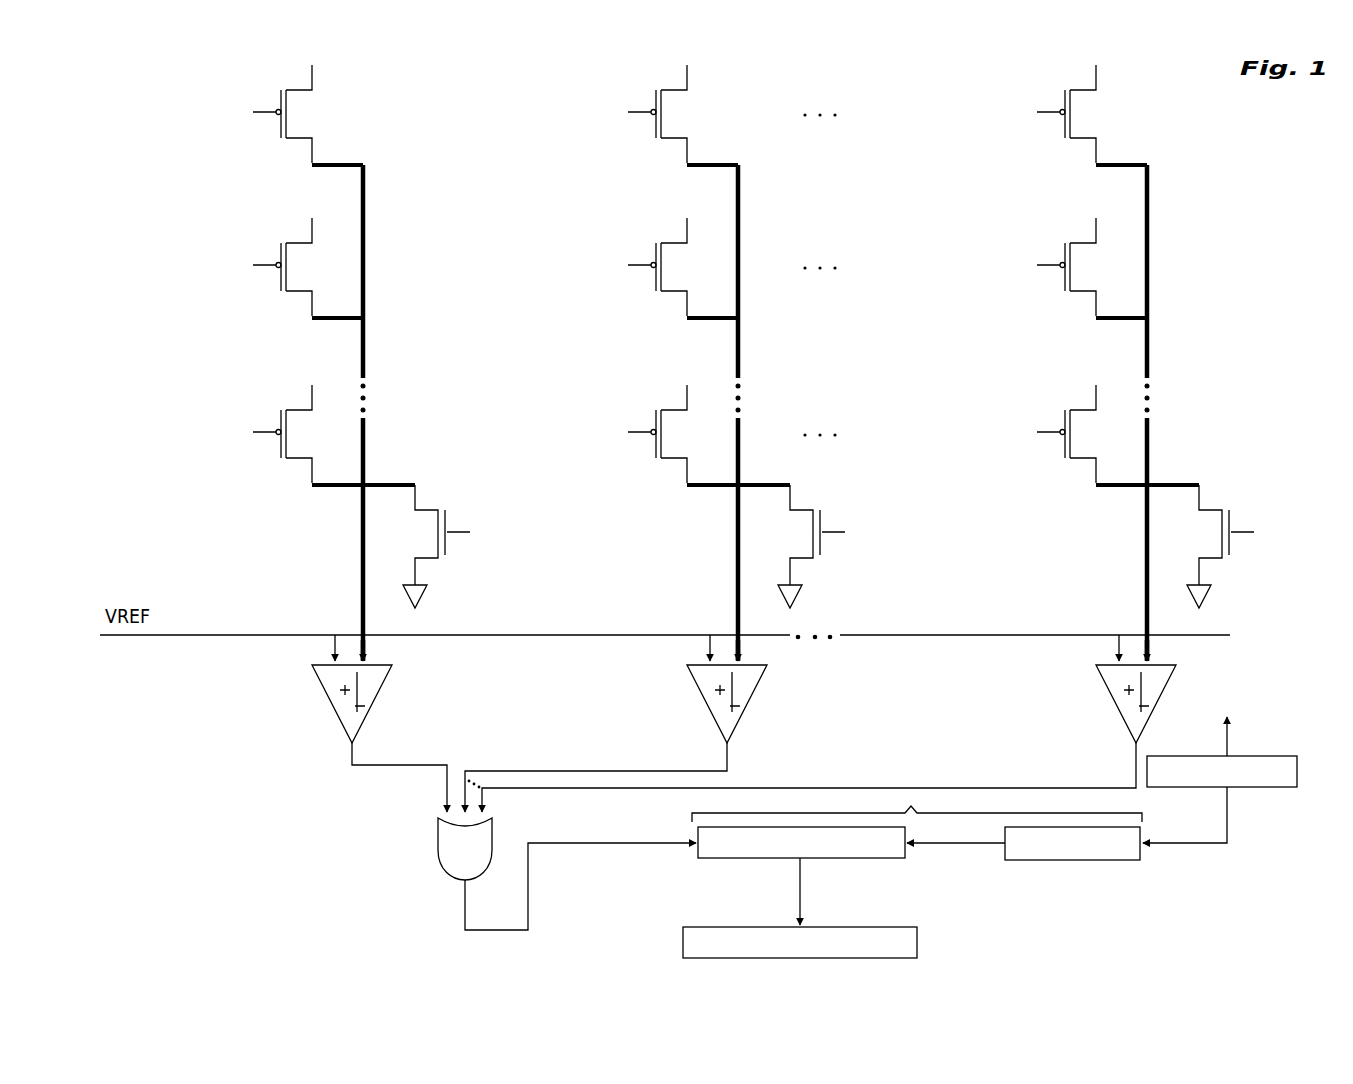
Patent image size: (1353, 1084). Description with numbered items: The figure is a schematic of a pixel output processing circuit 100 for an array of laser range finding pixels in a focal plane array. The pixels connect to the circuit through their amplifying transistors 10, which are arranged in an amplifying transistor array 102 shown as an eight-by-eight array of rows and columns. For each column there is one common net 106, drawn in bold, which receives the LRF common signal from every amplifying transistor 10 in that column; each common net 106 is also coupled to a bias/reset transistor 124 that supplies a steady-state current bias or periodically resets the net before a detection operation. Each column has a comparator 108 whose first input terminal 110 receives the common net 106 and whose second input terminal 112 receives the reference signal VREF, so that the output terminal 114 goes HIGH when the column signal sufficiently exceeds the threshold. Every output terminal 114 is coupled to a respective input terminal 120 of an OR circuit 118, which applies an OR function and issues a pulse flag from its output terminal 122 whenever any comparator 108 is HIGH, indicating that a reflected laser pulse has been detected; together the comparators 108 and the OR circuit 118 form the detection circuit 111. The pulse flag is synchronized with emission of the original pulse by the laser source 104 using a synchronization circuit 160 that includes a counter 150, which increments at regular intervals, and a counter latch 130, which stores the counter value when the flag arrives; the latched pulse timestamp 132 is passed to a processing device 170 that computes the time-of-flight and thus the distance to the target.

The amplifying transistor 10 is at (311, 117).
The pixel output processing circuit 100 is at (1281, 157).
The amplifying transistor array 102 is at (1206, 362).
The laser source 104 is at (1261, 790).
The common net 106 is at (361, 600).
The comparator 108 is at (334, 705).
The first input terminal 110 is at (332, 652).
The detection circuit 111 is at (313, 806).
The second input terminal 112 is at (368, 655).
The output terminal 114 is at (351, 745).
The OR circuit 118 is at (442, 849).
The input terminal 120 is at (441, 830).
The output terminal 122 is at (468, 886).
The bias/reset transistor 124 is at (431, 540).
The counter latch 130 is at (706, 858).
The pulse timestamp output 132 is at (799, 880).
The counter 150 is at (1108, 862).
The synchronization circuit 160 is at (909, 811).
The processing device 170 is at (683, 935).